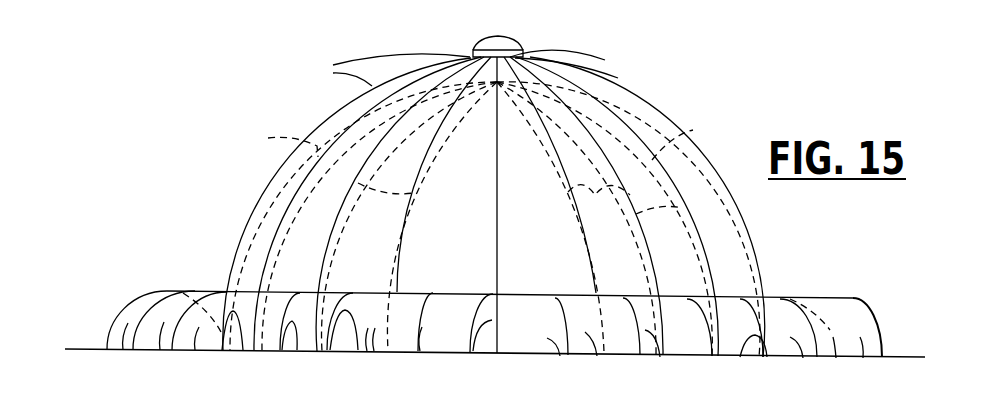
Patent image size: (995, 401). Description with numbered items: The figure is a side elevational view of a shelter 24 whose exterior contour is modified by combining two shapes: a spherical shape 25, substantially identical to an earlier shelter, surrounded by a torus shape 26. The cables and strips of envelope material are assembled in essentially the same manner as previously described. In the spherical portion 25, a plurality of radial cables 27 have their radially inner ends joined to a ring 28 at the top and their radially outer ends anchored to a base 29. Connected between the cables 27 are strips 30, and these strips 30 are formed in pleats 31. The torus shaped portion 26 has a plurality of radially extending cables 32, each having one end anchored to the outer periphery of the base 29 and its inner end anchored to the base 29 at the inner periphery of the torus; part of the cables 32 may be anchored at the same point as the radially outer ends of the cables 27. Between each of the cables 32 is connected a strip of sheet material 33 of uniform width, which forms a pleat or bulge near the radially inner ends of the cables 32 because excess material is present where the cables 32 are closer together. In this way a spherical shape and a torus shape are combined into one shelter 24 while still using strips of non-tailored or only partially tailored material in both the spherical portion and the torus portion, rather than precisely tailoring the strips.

The shelter 24 is at (655, 105).
The spherical shape 25 is at (272, 177).
The torus shape 26 is at (140, 292).
The radial cables 27 is at (326, 164).
The ring 28 is at (505, 40).
The base 29 is at (90, 349).
The strips 30 is at (305, 252).
The pleats 31 is at (468, 68).
The radially extending cables 32 is at (330, 350).
The strip of sheet material 33 is at (195, 350).